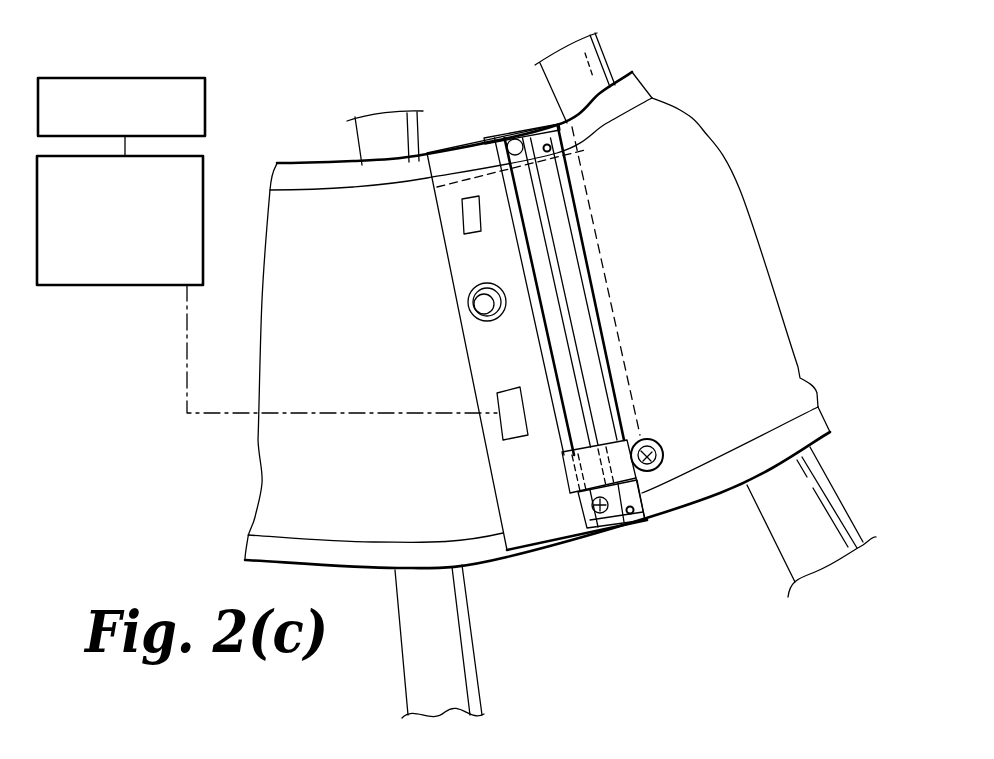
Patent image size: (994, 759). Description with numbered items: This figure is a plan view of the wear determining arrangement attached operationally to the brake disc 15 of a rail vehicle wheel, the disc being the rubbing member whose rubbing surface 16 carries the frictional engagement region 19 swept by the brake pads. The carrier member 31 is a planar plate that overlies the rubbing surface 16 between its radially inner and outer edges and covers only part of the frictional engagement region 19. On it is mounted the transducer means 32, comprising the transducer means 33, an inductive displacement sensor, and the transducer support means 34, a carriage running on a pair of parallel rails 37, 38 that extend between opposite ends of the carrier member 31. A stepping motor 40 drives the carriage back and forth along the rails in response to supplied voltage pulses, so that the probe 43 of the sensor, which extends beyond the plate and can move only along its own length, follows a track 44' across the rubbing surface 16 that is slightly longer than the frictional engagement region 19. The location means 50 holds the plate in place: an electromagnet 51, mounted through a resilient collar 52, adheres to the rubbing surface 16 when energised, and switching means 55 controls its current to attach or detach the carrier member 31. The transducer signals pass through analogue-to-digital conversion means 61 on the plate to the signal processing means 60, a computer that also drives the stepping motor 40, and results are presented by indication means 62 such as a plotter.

The brake disc 15 is at (622, 71).
The rubbing surface 16 is at (635, 93).
The frictional engagement region 19 is at (672, 148).
The carrier member 31 is at (499, 491).
The transducer means 32 is at (664, 431).
The transducer means 33 is at (655, 468).
The transducer support means 34 is at (562, 488).
The rail 37 is at (503, 158).
The rail 38 is at (537, 143).
The stepping motor 40 is at (616, 530).
The probe 43 is at (655, 437).
The track 44' is at (595, 290).
The location means 50 is at (456, 312).
The electromagnet 51 is at (485, 307).
The collar 52 is at (480, 285).
The switching means 55 is at (470, 213).
The signal processing means 60 is at (97, 267).
The analogue-to-digital conversion means 61 is at (512, 418).
The indication means 62 is at (190, 108).